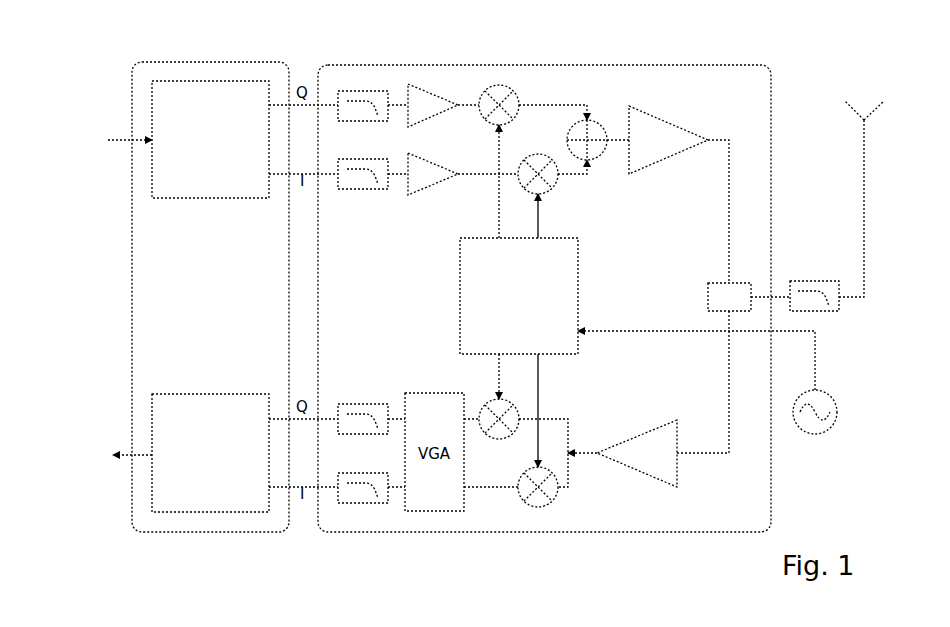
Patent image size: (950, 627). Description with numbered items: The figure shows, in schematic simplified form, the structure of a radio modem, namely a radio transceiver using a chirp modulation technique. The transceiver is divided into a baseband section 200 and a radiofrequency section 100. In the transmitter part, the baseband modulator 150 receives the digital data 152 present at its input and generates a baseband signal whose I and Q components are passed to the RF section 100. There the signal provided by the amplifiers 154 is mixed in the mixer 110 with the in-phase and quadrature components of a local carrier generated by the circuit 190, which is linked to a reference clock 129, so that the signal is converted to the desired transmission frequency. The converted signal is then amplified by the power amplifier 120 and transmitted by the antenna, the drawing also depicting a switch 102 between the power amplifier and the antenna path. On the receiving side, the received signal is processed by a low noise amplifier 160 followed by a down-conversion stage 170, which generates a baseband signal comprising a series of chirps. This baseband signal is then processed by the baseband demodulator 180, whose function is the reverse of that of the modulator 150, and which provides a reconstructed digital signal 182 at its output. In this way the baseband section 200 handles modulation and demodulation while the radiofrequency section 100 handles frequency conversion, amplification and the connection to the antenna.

The radiofrequency section 100 is at (771, 243).
The switch 102 is at (708, 282).
The mixer 110 is at (505, 85).
The power amplifier 120 is at (686, 130).
The reference clock 129 is at (816, 435).
The baseband modulator 150 is at (253, 81).
The digital data 152 is at (89, 126).
The amplifiers 154 is at (427, 90).
The low noise amplifier 160 is at (677, 467).
The down-conversion stage 170 is at (530, 510).
The baseband demodulator 180 is at (253, 513).
The reconstructed digital signal 182 is at (87, 468).
The circuit 190 is at (460, 250).
The baseband section 200 is at (132, 278).